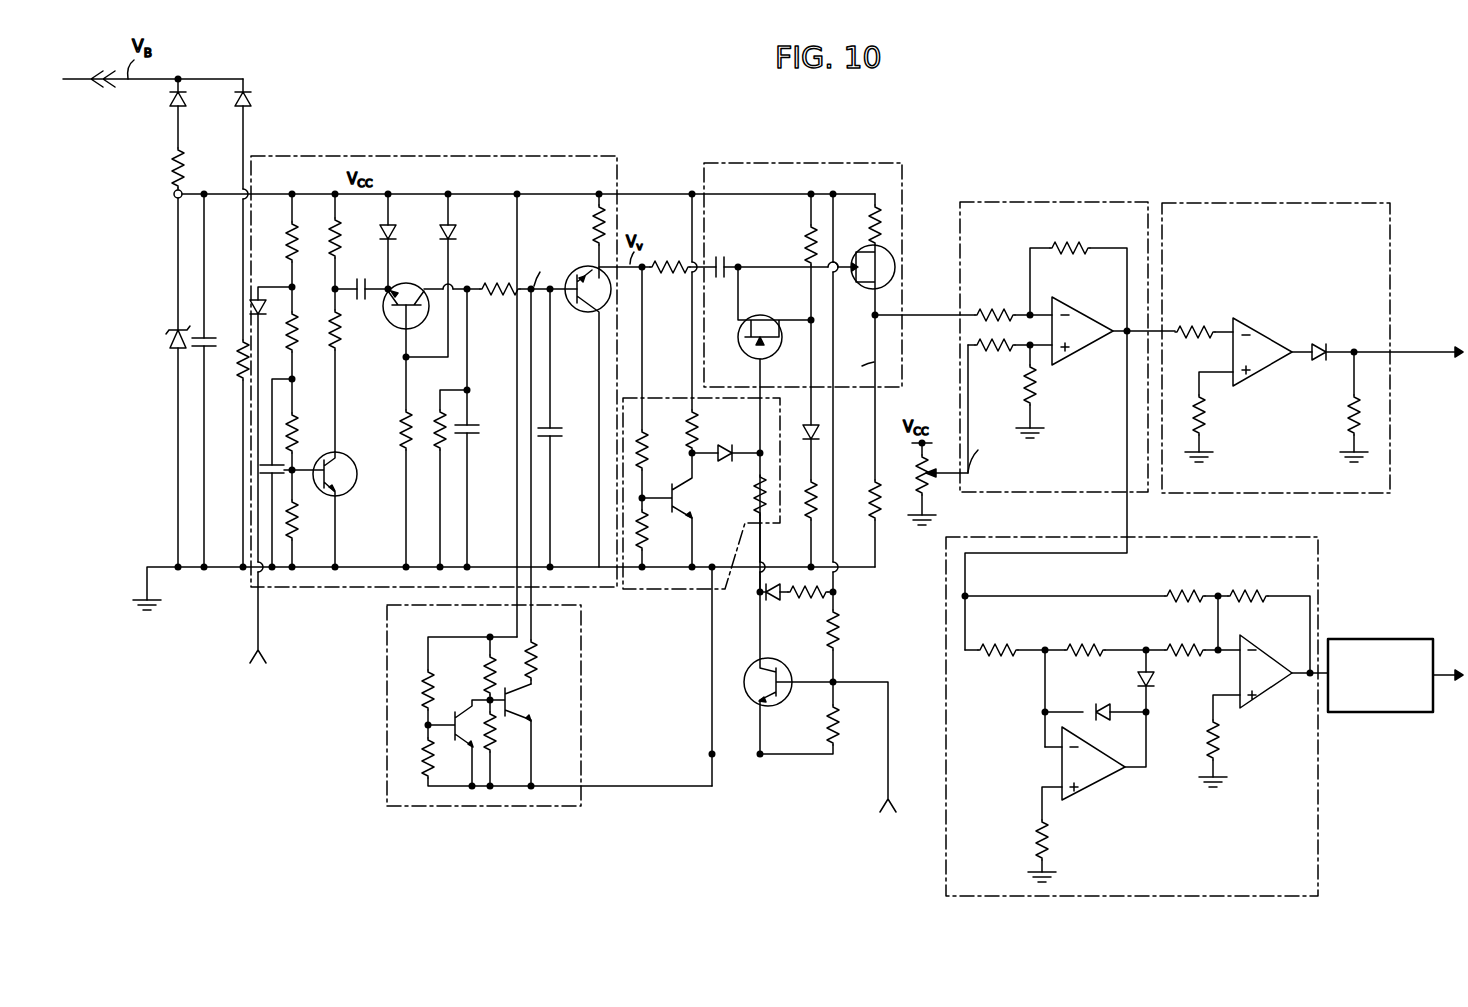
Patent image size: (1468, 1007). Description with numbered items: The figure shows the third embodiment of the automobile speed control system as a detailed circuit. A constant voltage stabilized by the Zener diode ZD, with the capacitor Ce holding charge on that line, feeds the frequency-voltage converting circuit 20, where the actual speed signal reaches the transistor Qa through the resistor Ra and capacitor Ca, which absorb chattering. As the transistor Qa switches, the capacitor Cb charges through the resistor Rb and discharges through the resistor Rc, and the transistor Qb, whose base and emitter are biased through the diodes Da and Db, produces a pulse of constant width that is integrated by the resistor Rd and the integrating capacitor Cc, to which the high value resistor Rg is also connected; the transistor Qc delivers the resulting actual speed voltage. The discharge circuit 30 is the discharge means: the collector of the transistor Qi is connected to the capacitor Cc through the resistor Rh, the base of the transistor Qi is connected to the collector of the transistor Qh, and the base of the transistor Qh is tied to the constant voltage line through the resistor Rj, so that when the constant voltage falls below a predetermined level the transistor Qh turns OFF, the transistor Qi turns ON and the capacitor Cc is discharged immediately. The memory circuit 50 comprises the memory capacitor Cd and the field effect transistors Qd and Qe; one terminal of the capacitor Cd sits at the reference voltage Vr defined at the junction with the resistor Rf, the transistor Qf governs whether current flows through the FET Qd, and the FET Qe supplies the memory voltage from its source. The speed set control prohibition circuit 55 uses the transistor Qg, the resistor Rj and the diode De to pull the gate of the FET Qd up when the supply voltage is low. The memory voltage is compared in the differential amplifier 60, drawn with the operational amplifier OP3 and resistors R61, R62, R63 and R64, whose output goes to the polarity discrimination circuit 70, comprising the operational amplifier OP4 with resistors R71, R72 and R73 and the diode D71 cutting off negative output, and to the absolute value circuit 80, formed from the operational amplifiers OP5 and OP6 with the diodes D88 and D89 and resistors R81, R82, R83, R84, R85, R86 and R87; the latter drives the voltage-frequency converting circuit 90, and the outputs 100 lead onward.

The frequency-voltage converting circuit 20 is at (482, 157).
The discharge circuit 30 is at (376, 721).
The memory circuit 50 is at (701, 163).
The speed set control prohibition circuit 55 is at (636, 591).
The differential amplifier 60 is at (1060, 202).
The polarity discrimination circuit 70 is at (1200, 203).
The absolute value circuit 80 is at (940, 892).
The voltage-frequency converting circuit 90 is at (1390, 636).
The output terminal 100 is at (1438, 515).
The Zener diode ZD is at (161, 382).
The capacitor Ce is at (214, 344).
The capacitor Ca is at (261, 469).
The resistor Ra is at (300, 350).
The resistor Rb is at (344, 252).
The resistor Rc is at (344, 344).
The capacitor Cb is at (360, 279).
The diode Db is at (390, 227).
The diode Da is at (450, 227).
The transistor Qa is at (356, 482).
The transistor Qb is at (392, 333).
The resistor Rg is at (439, 424).
The resistor Rd is at (521, 301).
The integrating capacitor Cc is at (560, 434).
The transistor Qc is at (572, 270).
The transistor Qh is at (466, 706).
The transistor Qi is at (522, 703).
The resistor Rh is at (541, 662).
The memory capacitor Cd is at (724, 254).
The field effect transistor Qd is at (740, 349).
The field effect transistor Qe is at (867, 289).
The reference voltage level Vr is at (811, 324).
The resistor Rj is at (686, 426).
The transistor Qg is at (688, 500).
The diode De is at (734, 444).
The resistor Rf is at (808, 484).
The transistor Qf is at (759, 704).
The resistor R61 is at (987, 314).
The resistor R62 is at (996, 366).
The resistor R63 is at (1100, 238).
The resistor R64 is at (1038, 401).
The operational amplifier OP3 is at (1072, 364).
The resistor R71 is at (1190, 328).
The resistor R72 is at (1206, 432).
The resistor R73 is at (1348, 428).
The diode D71 is at (1318, 336).
The operational amplifier OP4 is at (1254, 378).
The resistor R81 is at (1018, 646).
The resistor R82 is at (1078, 646).
The resistor R83 is at (1176, 646).
The resistor R84 is at (1180, 592).
The resistor R85 is at (1244, 592).
The resistor R86 is at (1048, 848).
The resistor R87 is at (1230, 744).
The diode D88 is at (1098, 700).
The diode D89 is at (1152, 682).
The operational amplifier OP5 is at (1082, 806).
The operational amplifier OP6 is at (1246, 708).